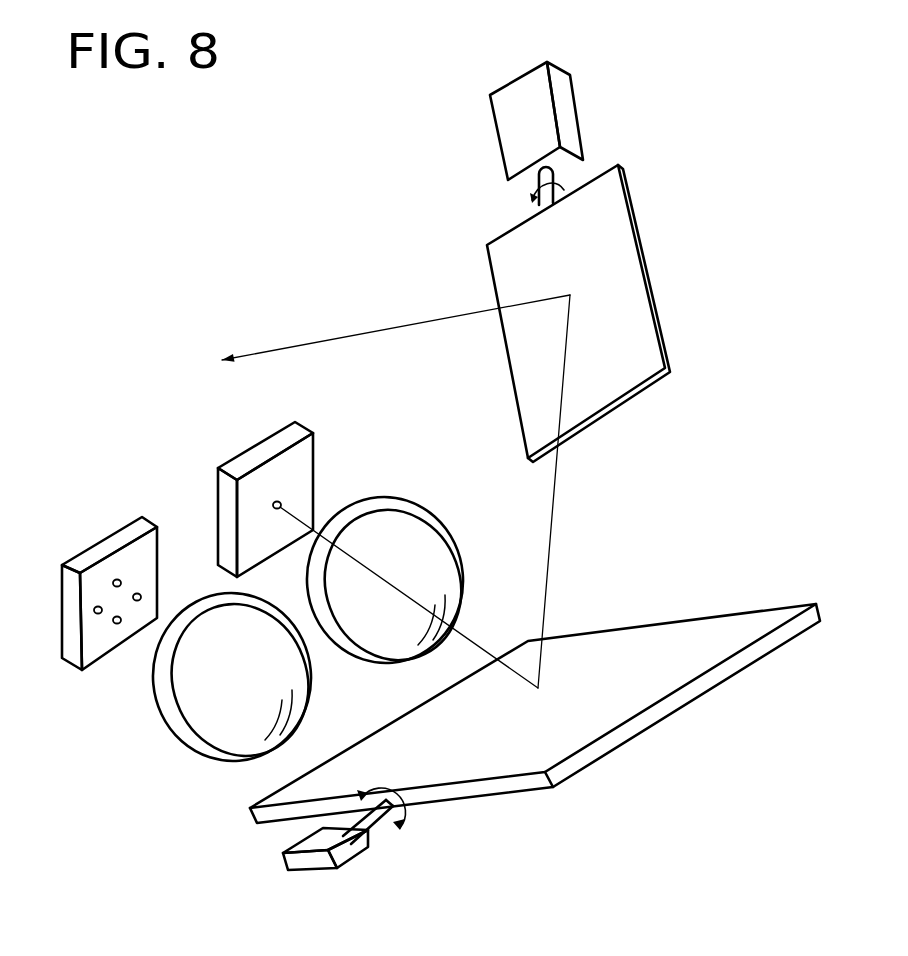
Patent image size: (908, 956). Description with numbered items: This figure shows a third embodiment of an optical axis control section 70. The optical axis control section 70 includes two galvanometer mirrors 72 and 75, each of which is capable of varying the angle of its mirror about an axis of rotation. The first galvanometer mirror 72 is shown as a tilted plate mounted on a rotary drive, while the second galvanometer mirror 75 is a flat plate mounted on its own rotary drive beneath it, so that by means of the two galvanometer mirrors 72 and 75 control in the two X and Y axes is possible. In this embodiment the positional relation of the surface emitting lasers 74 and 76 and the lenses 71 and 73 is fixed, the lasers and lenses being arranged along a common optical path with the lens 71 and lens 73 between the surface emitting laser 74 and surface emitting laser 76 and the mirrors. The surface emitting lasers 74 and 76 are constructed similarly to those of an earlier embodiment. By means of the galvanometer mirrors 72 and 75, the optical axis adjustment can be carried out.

The optical axis control section 70 is at (822, 478).
The lens 71 is at (180, 733).
The galvanometer mirror 72 is at (647, 259).
The lens 73 is at (433, 523).
The surface emitting laser 74 is at (98, 553).
The galvanometer mirror 75 is at (677, 712).
The surface emitting laser 76 is at (238, 462).